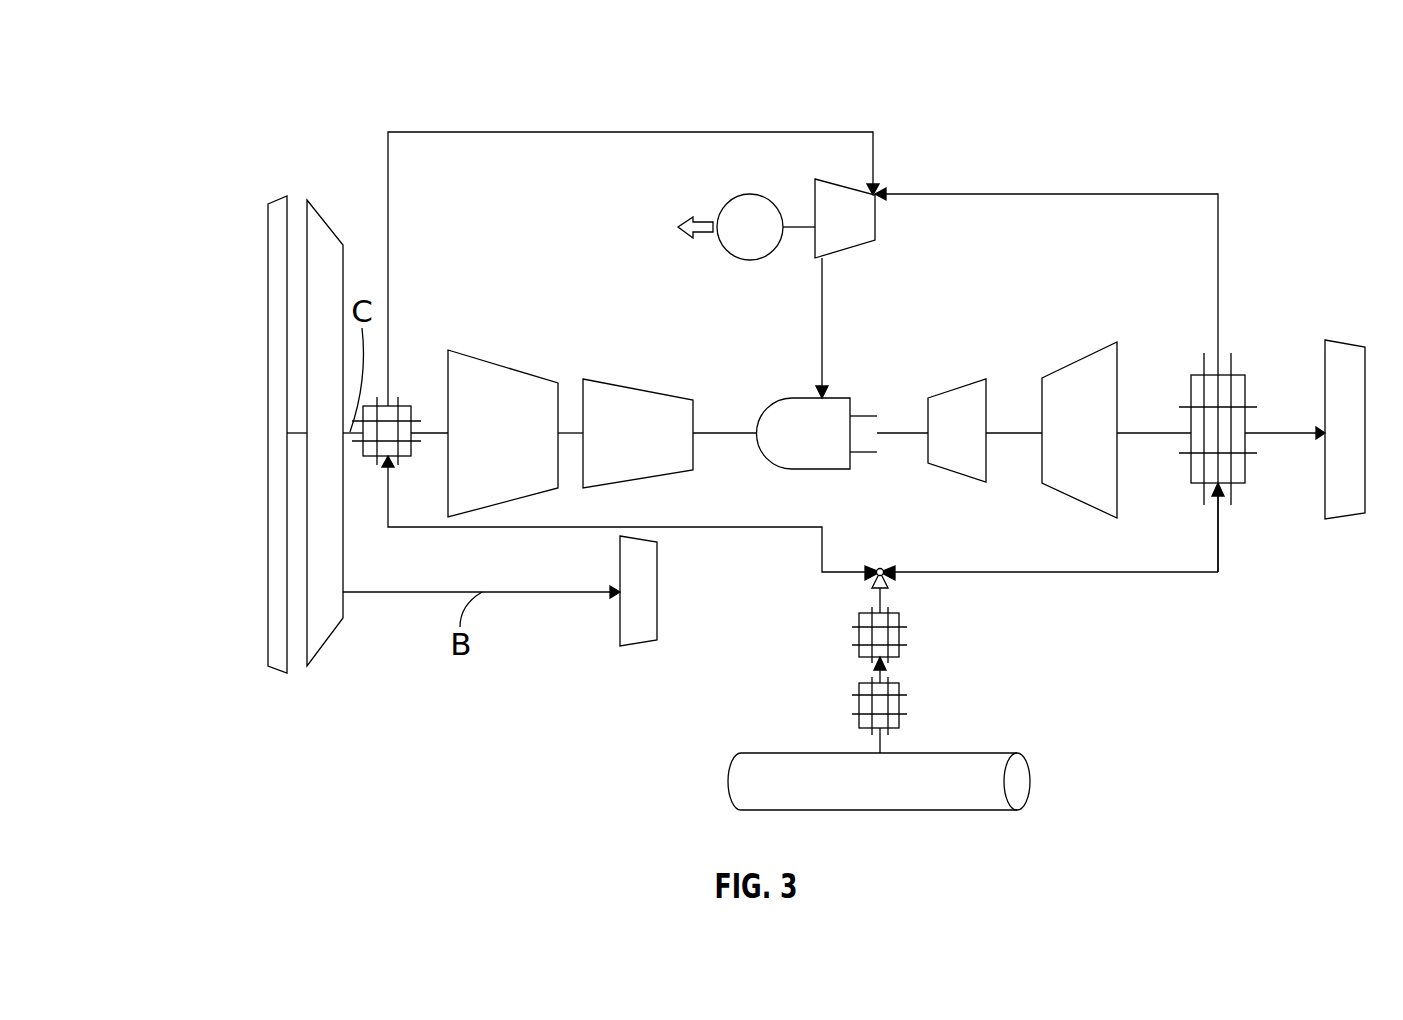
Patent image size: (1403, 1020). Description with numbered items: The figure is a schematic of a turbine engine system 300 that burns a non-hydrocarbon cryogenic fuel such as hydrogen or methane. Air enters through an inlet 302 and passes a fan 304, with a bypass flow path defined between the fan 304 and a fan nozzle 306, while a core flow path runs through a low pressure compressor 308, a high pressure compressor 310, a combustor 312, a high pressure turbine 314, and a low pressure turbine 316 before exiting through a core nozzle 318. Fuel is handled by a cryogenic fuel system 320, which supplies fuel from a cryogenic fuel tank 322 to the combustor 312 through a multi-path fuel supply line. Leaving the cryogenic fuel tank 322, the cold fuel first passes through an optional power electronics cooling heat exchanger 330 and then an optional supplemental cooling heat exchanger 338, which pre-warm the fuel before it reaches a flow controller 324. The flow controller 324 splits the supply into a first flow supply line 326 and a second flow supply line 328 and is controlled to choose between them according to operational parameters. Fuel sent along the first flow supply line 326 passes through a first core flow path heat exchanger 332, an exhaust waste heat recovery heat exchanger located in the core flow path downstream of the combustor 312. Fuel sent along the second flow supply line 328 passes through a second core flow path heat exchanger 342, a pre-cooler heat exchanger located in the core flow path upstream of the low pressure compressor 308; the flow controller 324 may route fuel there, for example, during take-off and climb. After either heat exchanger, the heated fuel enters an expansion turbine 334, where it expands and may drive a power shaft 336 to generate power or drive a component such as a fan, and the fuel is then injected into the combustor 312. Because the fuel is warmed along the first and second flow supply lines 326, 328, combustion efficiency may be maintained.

The turbine engine system 300 is at (196, 78).
The inlet 302 is at (276, 199).
The fan 304 is at (311, 203).
The fan nozzle 306 is at (640, 647).
The low pressure compressor 308 is at (500, 357).
The high pressure compressor 310 is at (640, 388).
The combustor 312 is at (846, 400).
The high pressure turbine 314 is at (955, 390).
The low pressure turbine 316 is at (1078, 354).
The core nozzle 318 is at (1340, 341).
The cryogenic fuel system 320 is at (1107, 652).
The cryogenic fuel tank 322 is at (917, 811).
The flow controller 324 is at (882, 565).
The first flow supply line 326 is at (1045, 572).
The second flow supply line 328 is at (735, 527).
The power electronics cooling heat exchanger 330 is at (907, 705).
The first core flow path heat exchanger 332 is at (1240, 490).
The expansion turbine 334 is at (822, 205).
The power shaft 336 is at (728, 252).
The supplemental cooling heat exchanger 338 is at (907, 637).
The second core flow path heat exchanger 342 is at (398, 408).